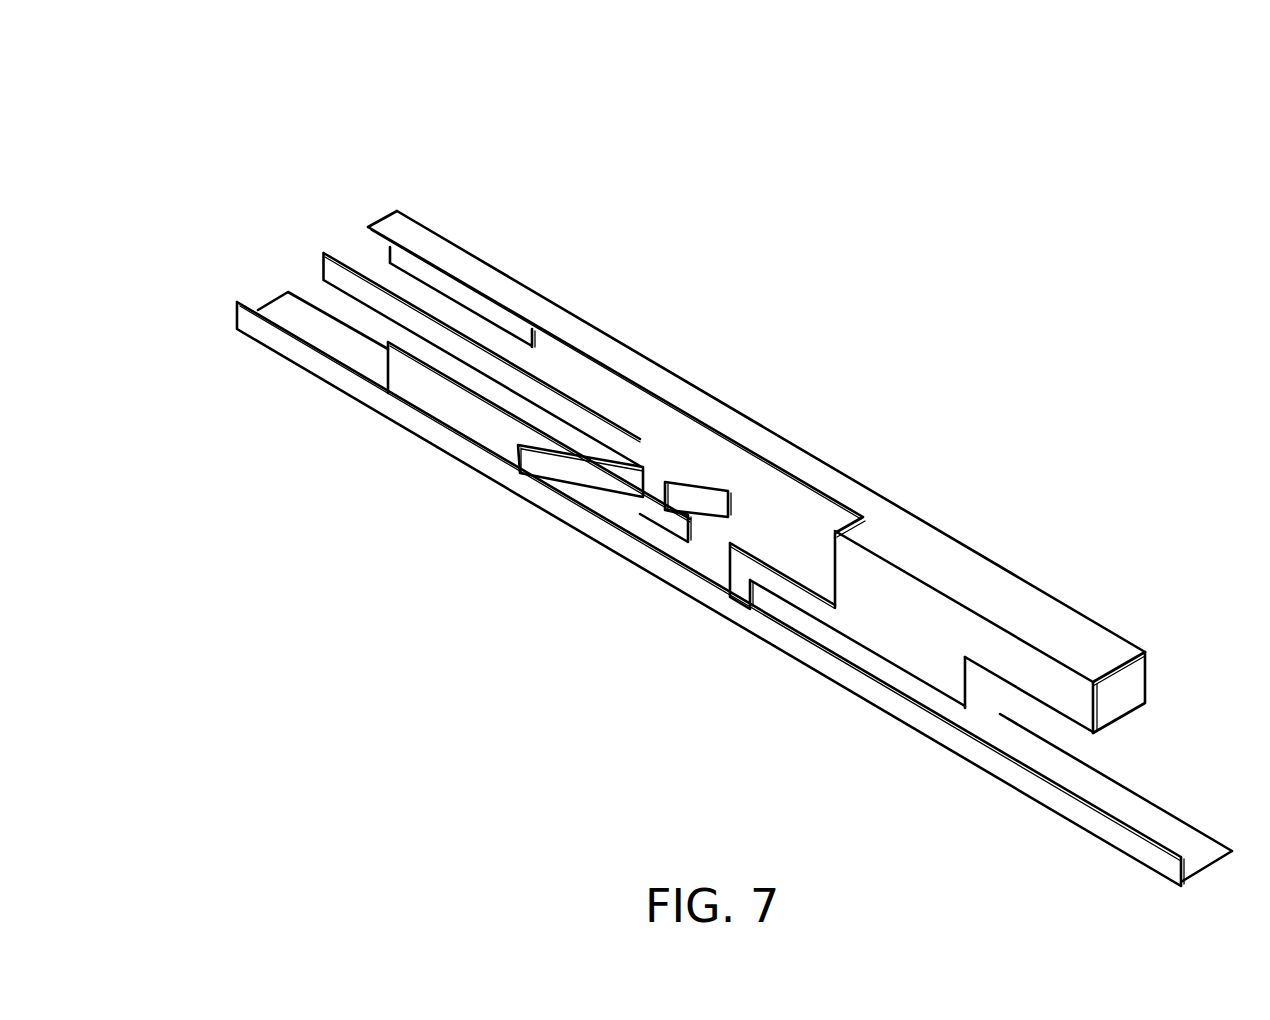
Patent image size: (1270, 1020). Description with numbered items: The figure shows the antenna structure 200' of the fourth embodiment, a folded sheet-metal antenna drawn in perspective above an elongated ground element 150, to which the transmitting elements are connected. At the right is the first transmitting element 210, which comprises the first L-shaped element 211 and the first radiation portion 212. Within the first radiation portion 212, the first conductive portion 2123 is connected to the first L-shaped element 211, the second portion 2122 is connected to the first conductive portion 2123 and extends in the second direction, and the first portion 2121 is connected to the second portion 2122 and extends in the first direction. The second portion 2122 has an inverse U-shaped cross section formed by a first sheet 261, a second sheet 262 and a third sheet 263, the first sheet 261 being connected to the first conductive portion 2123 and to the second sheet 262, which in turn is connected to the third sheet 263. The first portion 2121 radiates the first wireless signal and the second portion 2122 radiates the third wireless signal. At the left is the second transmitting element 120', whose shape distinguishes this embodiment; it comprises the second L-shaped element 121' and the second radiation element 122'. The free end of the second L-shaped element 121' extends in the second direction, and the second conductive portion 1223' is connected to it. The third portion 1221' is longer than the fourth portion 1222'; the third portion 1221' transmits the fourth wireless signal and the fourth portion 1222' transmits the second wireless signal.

The antenna structure 200' is at (675, 346).
The second transmitting element 120' is at (545, 310).
The second L-shaped element 121' is at (539, 309).
The second radiation element 122' is at (545, 382).
The third portion 1221' is at (482, 352).
The fourth portion 1222' is at (700, 430).
The second conductive portion 1223' is at (605, 388).
The first transmitting element 210 is at (766, 463).
The first L-shaped element 211 is at (782, 410).
The first radiation portion 212 is at (766, 472).
The first portion 2121 is at (857, 511).
The second portion 2122 is at (1065, 600).
The first conductive portion 2123 is at (938, 538).
The first sheet 261 is at (1029, 609).
The second sheet 262 is at (1068, 627).
The third sheet 263 is at (1124, 646).
The ground element 150 is at (734, 589).